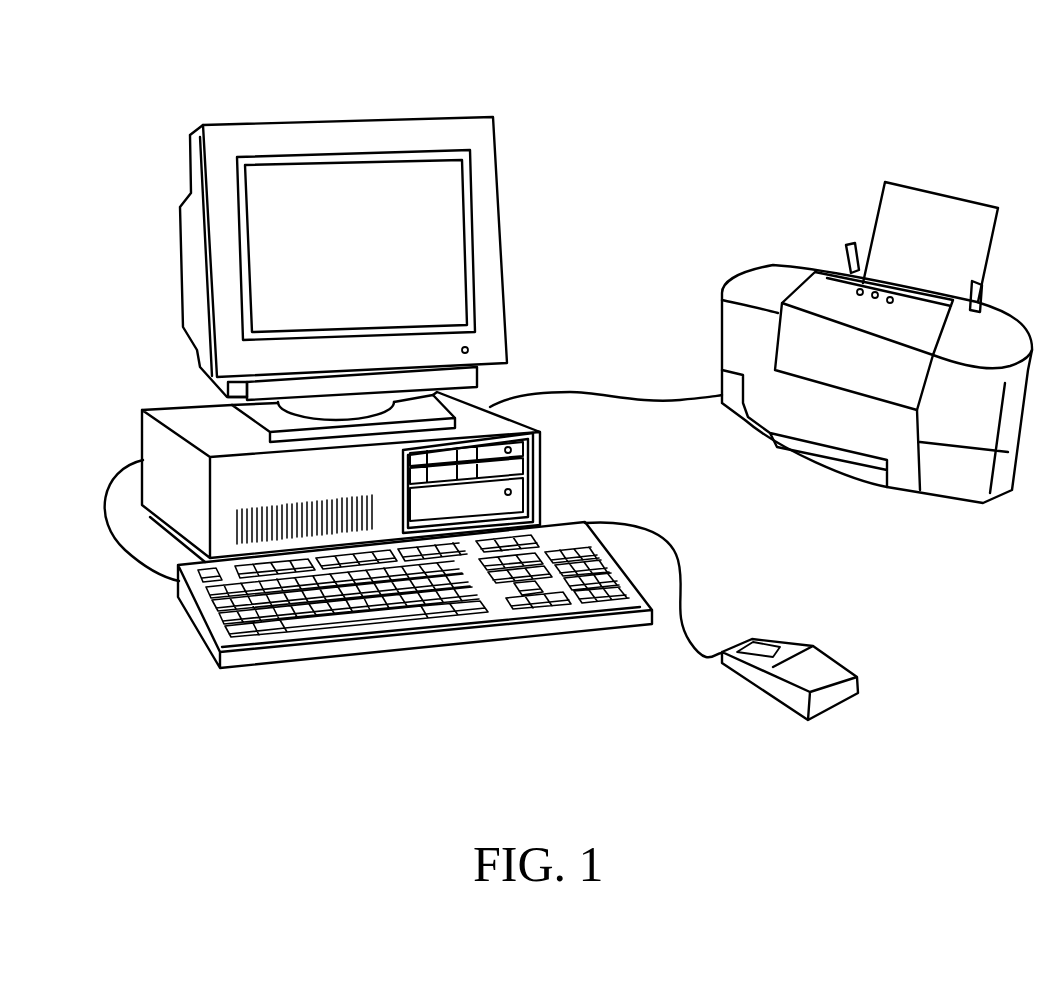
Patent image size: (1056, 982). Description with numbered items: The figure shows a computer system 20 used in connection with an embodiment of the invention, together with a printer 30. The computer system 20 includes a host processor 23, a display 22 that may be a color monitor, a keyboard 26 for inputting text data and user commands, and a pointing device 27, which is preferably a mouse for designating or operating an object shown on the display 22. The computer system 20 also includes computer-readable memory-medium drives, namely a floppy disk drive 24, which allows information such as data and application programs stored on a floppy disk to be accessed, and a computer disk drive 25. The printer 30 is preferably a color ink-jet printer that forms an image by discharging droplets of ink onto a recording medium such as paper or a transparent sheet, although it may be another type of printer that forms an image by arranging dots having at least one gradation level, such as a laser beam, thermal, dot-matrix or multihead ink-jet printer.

The computer system 20 is at (490, 108).
The display 22 is at (443, 243).
The host processor 23 is at (353, 118).
The floppy disk drive 24 is at (503, 471).
The computer disk drive 25 is at (520, 503).
The keyboard 26 is at (292, 637).
The pointing device 27 is at (808, 720).
The printer 30 is at (775, 200).